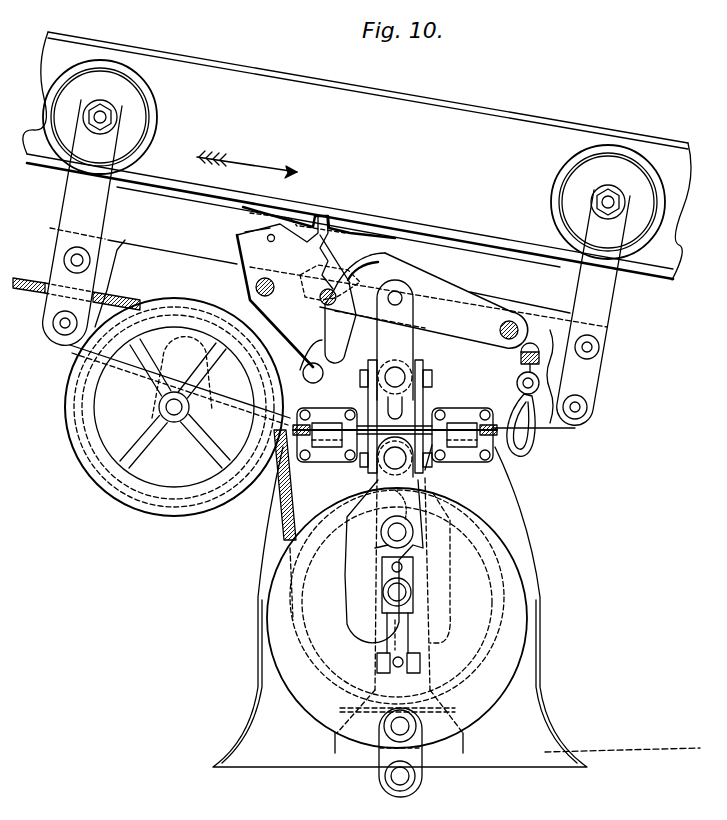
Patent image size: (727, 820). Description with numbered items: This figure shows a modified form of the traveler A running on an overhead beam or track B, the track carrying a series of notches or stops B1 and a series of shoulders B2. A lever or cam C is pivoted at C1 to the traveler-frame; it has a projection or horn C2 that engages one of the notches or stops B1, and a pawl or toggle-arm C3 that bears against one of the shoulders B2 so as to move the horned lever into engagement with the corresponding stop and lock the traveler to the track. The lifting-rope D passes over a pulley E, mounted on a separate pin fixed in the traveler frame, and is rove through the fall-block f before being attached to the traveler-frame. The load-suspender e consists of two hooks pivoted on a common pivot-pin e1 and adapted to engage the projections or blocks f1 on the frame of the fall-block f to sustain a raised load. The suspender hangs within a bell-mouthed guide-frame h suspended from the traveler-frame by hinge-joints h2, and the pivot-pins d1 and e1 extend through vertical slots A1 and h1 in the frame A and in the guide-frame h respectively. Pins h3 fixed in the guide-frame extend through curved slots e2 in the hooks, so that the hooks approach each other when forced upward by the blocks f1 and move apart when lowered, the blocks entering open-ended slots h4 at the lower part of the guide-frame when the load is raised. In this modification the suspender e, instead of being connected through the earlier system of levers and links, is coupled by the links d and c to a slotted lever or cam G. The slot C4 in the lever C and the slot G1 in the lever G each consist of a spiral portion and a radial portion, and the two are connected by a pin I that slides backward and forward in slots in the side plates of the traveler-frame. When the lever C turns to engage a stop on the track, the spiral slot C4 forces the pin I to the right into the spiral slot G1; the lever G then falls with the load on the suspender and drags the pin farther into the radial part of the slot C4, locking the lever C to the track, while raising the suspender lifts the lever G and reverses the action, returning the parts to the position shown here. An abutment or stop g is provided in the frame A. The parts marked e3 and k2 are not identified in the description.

The overhead beam or track B is at (357, 156).
The notches or stops B1 is at (352, 233).
The shoulders B2 is at (296, 224).
The lever C is at (277, 292).
The pivot C1 is at (256, 287).
The projection or horn C2 is at (323, 226).
The pawl or toggle-arm C3 is at (270, 227).
The slot C4 is at (302, 361).
The sliding pin I is at (338, 285).
The slotted lever or cam G is at (424, 300).
The slot G1 is at (385, 260).
The traveler A is at (524, 379).
The vertical slot A1 is at (424, 372).
The link c is at (395, 349).
The link d is at (367, 404).
The universal joint pivot-pin d1 is at (405, 372).
The lifting-rope D is at (20, 288).
The pulley E is at (170, 512).
The abutment or stop g is at (330, 362).
The bearing k2 is at (330, 448).
The vertical slot h1 is at (434, 464).
The hinge-joints h2 is at (460, 448).
The load-suspender e is at (440, 518).
The pivot-pin e1 is at (385, 475).
The curved slots e2 is at (390, 515).
The lug e3 is at (385, 547).
The pins h3 is at (403, 537).
The projections or blocks f1 is at (412, 605).
The open-ended slots h4 is at (422, 650).
The fall-block f is at (397, 642).
The bell-mouthed guide-frame h is at (456, 607).